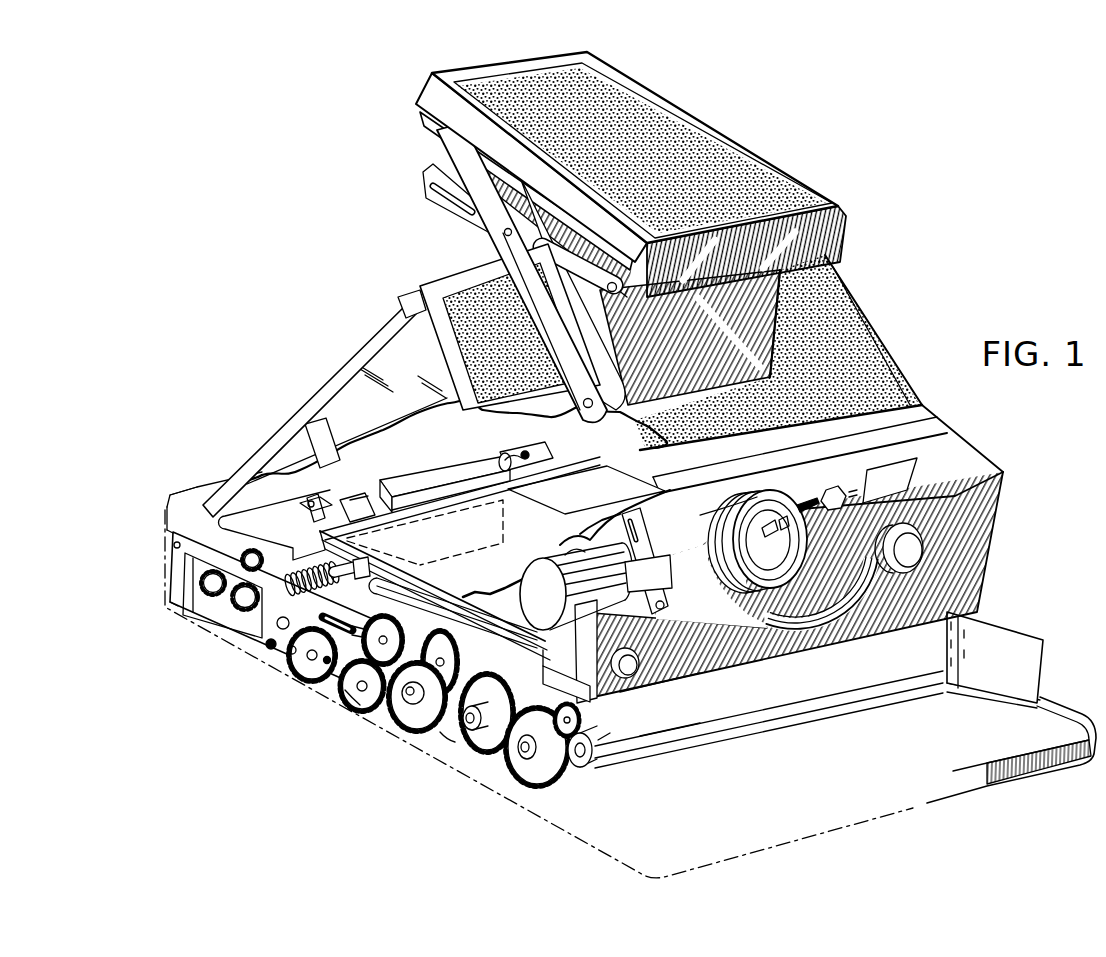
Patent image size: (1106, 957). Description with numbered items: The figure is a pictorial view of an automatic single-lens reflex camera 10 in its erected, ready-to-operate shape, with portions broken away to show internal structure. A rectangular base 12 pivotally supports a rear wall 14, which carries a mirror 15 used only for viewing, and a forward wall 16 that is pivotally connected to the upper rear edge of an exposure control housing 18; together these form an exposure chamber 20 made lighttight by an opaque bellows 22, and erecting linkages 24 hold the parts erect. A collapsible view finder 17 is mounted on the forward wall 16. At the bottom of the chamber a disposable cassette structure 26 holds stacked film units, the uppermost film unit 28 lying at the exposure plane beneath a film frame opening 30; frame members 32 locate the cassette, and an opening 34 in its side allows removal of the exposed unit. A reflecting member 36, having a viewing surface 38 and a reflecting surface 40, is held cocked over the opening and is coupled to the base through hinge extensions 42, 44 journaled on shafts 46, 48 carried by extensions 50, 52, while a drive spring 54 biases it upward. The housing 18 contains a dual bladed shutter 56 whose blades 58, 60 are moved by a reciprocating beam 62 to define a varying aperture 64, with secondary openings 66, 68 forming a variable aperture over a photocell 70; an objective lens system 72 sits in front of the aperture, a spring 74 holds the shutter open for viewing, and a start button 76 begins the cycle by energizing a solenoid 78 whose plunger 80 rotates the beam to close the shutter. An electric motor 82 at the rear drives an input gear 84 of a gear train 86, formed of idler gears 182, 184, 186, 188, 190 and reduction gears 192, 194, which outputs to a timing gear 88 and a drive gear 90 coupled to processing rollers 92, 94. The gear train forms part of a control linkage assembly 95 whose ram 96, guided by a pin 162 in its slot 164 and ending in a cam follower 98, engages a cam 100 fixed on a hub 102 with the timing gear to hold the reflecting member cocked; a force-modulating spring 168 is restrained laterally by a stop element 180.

The single-lens reflex camera 10 is at (323, 378).
The base 12 is at (158, 503).
The rear wall 14 is at (350, 362).
The mirror 15 is at (388, 370).
The forward wall 16 is at (848, 300).
The view finder 17 is at (773, 170).
The exposure control housing 18 is at (983, 455).
The exposure chamber 20 is at (447, 446).
The bellows 22 is at (407, 323).
The erecting linkages 24 is at (277, 433).
The cassette structure 26 is at (463, 724).
The film unit 28 is at (508, 622).
The film frame opening 30 is at (542, 667).
The frame members 32 is at (440, 652).
The opening 34 is at (598, 738).
The reflecting member 36 is at (633, 470).
The viewing surface 38 is at (453, 562).
The reflecting surface 40 is at (488, 588).
The hinge extension 42 is at (357, 497).
The hinge extension 44 is at (540, 462).
The shaft 46 is at (310, 505).
The shaft 48 is at (513, 462).
The extension 50 is at (313, 503).
The extension 52 is at (525, 450).
The drive spring 54 is at (292, 556).
The shutter 56 is at (920, 470).
The shutter blade 58 is at (900, 467).
The shutter blade 60 is at (851, 476).
The reciprocating beam 62 is at (636, 556).
The aperture 64 is at (760, 497).
The secondary tapered aperture opening 66 is at (827, 479).
The secondary tapered aperture opening 68 is at (838, 505).
The photocell 70 is at (928, 545).
The objective lens system 72 is at (766, 588).
The spring 74 is at (610, 654).
The start button 76 is at (660, 683).
The solenoid 78 is at (577, 550).
The plunger 80 is at (625, 582).
The electric motor 82 is at (437, 468).
The input gear 84 is at (213, 560).
The gear train 86 is at (369, 706).
The timing gear 88 is at (440, 732).
The drive gear 90 is at (596, 760).
The processing roller 92 is at (720, 683).
The processing roller 94 is at (667, 732).
The control linkage assembly 95 is at (150, 583).
The ram 96 is at (312, 613).
The cam follower 98 is at (395, 648).
The cam 100 is at (396, 706).
The hub 102 is at (413, 683).
The pin 162 is at (358, 623).
The slot 164 is at (343, 610).
The force-modulating spring 168 is at (207, 637).
The stop element 180 is at (266, 648).
The idler gear 182 is at (327, 663).
The idler gear 184 is at (357, 690).
The idler gear 186 is at (462, 684).
The idler gear 188 is at (492, 770).
The idler gear 190 is at (528, 780).
The reduction gear 192 is at (242, 555).
The reduction gear 194 is at (290, 654).